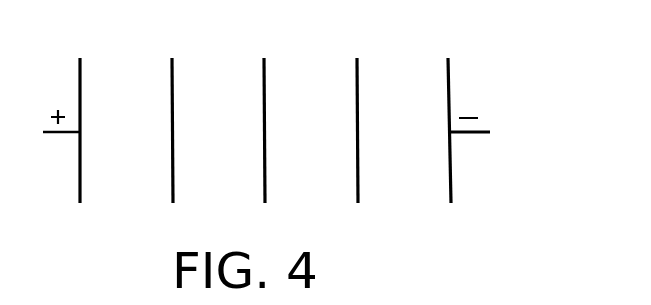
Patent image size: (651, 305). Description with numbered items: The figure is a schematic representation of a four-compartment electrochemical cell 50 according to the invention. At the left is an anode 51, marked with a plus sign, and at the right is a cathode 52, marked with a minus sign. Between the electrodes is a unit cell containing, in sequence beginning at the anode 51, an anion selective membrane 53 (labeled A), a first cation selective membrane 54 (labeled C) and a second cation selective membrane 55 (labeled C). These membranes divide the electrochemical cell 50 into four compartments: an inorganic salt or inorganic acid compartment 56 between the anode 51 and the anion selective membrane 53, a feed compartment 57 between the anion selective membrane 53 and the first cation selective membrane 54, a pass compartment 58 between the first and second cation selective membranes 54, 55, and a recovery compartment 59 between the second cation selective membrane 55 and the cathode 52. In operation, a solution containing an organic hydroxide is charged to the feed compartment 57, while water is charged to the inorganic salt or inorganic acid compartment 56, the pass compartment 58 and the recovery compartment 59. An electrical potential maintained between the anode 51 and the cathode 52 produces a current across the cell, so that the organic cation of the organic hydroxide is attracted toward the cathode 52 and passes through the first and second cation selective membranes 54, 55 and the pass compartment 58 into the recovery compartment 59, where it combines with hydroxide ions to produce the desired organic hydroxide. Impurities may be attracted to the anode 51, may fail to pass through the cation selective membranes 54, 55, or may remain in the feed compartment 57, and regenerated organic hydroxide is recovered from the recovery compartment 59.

The electrochemical cell 50 is at (504, 80).
The anode 51 is at (66, 116).
The cathode 52 is at (461, 116).
The anion selective membrane 53 is at (174, 134).
The first cation selective membrane 54 is at (266, 134).
The second cation selective membrane 55 is at (356, 134).
The inorganic salt or inorganic acid compartment 56 is at (123, 193).
The feed compartment 57 is at (218, 193).
The pass compartment 58 is at (312, 193).
The recovery compartment 59 is at (407, 193).